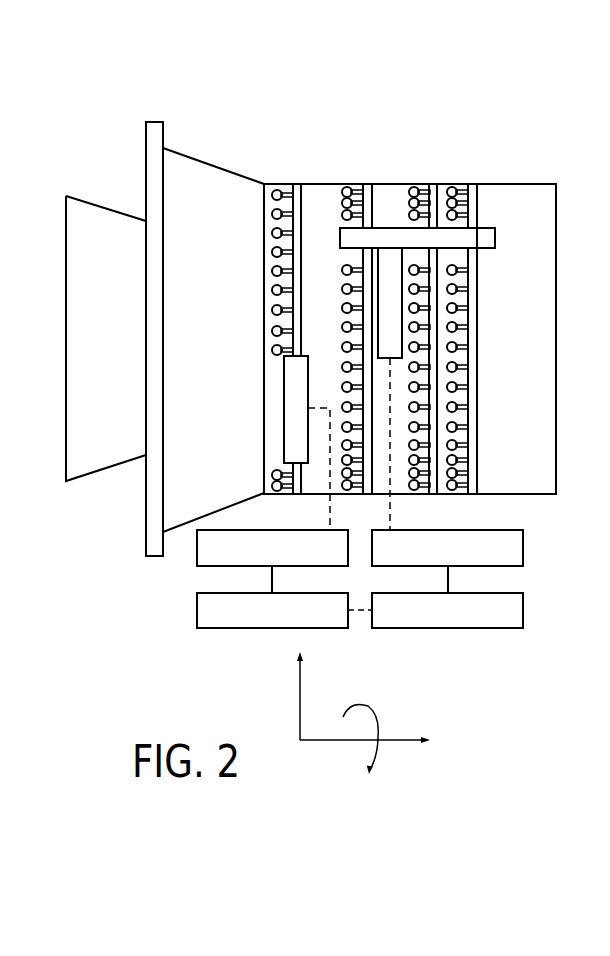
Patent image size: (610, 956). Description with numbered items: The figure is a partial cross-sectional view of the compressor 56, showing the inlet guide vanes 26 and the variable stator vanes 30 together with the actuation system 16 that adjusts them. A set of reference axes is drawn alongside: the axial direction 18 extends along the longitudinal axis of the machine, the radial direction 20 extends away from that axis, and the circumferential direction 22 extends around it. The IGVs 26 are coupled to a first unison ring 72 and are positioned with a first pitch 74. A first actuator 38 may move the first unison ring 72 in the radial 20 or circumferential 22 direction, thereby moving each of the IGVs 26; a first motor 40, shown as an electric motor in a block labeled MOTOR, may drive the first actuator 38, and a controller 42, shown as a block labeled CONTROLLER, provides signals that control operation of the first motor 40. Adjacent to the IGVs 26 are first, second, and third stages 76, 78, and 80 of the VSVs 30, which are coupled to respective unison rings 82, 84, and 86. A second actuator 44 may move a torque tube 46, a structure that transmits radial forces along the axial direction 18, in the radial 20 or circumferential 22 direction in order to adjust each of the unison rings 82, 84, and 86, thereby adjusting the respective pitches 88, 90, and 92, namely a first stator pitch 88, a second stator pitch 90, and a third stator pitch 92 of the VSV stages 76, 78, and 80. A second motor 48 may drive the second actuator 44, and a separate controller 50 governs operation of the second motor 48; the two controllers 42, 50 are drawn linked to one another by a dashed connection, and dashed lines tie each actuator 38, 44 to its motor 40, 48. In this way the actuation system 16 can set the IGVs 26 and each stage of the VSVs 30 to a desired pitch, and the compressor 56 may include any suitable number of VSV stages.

The actuation system 16 is at (554, 655).
The axial direction 18 is at (402, 737).
The radial direction 20 is at (300, 700).
The circumferential direction 22 is at (373, 704).
The inlet guide vanes 26 is at (274, 183).
The variable stator vanes 30 is at (438, 275).
The first actuator 38 is at (284, 408).
The first motor 40 is at (197, 550).
The controller 42 is at (197, 610).
The second actuator 44 is at (378, 301).
The torque tube 46 is at (495, 238).
The second motor 48 is at (523, 548).
The controller 50 is at (523, 612).
The compressor 56 is at (438, 263).
The first unison ring 72 is at (300, 183).
The first pitch 74 is at (251, 197).
The first stage of VSVs 76 is at (347, 183).
The second stage of VSVs 78 is at (413, 183).
The third stage of VSVs 80 is at (452, 183).
The unison ring 82 is at (367, 183).
The unison ring 84 is at (433, 183).
The unison ring 86 is at (473, 196).
The first stator pitch 88 is at (330, 201).
The second stator pitch 90 is at (397, 193).
The third stator pitch 92 is at (445, 175).